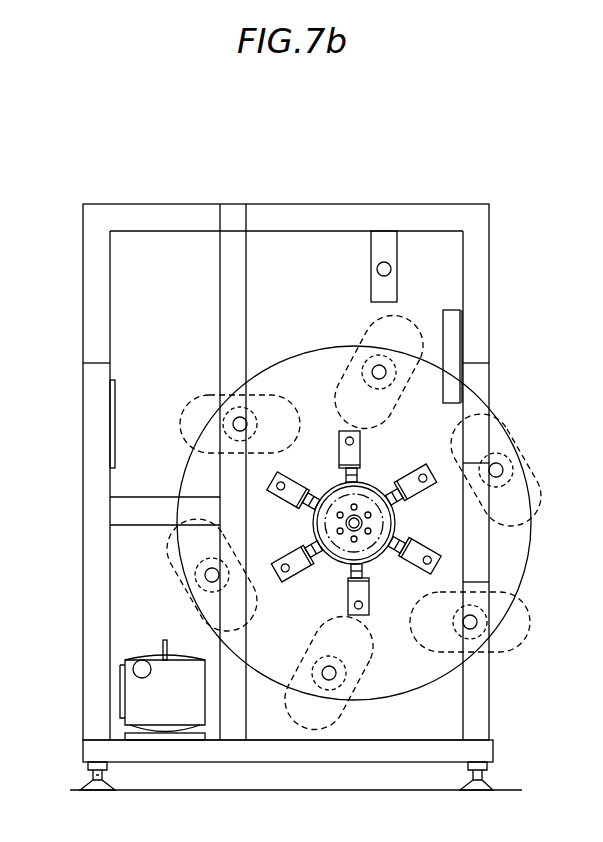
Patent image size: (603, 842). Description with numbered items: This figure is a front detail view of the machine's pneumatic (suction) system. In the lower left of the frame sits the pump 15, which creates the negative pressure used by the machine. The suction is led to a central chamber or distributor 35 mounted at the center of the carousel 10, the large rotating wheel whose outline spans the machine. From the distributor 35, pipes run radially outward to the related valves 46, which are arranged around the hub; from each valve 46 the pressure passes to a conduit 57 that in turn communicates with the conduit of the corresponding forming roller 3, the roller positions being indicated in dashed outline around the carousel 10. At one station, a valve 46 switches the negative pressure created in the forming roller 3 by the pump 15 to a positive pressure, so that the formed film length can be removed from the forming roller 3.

The forming roller 3 is at (412, 318).
The carousel 10 is at (510, 537).
The pump 15 is at (160, 697).
The central chamber or distributor 35 is at (395, 515).
The valve 46 is at (340, 435).
The conduit 57 is at (237, 423).